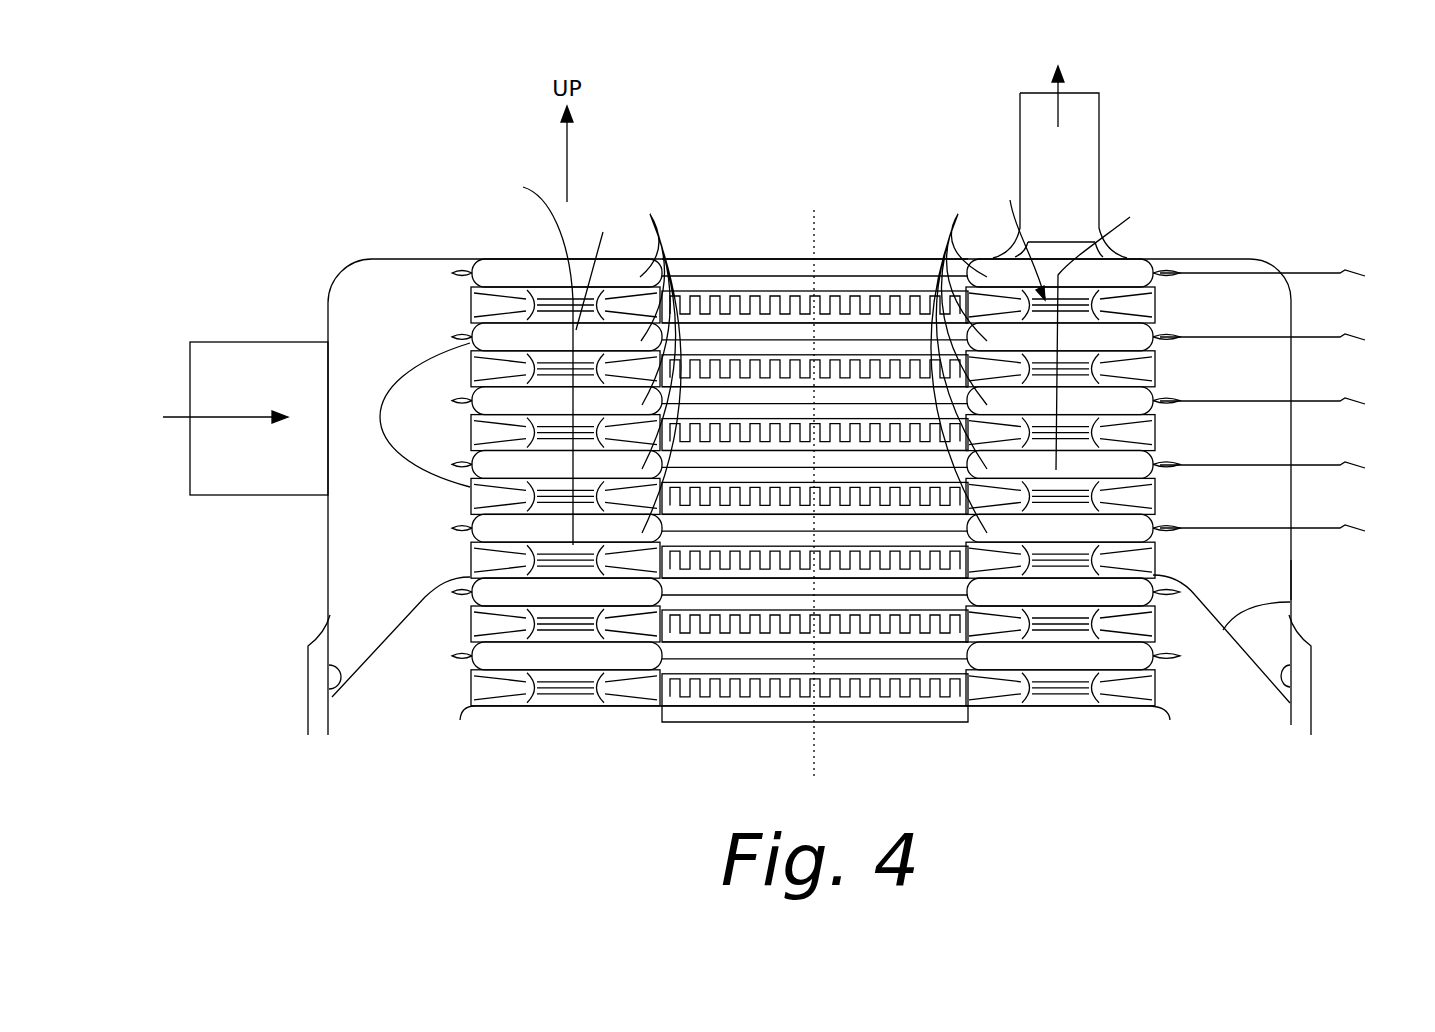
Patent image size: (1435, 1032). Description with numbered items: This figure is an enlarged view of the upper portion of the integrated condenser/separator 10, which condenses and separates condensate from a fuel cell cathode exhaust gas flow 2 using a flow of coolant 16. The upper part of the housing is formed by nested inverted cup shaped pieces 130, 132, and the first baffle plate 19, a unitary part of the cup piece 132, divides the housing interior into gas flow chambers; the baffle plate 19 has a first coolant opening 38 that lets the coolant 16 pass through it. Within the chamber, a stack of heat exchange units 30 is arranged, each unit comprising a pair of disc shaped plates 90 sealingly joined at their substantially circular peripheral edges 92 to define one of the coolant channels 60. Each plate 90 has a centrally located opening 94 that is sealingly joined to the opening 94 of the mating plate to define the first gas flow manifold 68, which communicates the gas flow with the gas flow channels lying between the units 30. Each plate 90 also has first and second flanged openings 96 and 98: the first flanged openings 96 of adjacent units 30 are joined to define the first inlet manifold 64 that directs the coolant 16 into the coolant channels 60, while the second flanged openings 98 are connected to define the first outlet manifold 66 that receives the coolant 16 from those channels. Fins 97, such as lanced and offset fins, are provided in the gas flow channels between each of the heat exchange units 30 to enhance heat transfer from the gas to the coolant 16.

The inlet air flow 2 is at (230, 418).
The integrated condenser/separator 10 is at (867, 117).
The coolant 16 is at (1067, 82).
The first baffle plate 19 is at (309, 665).
The heat exchange units 30 is at (470, 272).
The first coolant opening 38 is at (417, 602).
The first plurality of coolant channels 60 is at (650, 214).
The first inlet manifold 64 is at (603, 232).
The first outlet manifold 66 is at (1010, 200).
The first gas flow manifold 68 is at (823, 260).
The plates 90 is at (1279, 404).
The peripheral edges 92 is at (470, 303).
The centrally located opening 94 is at (958, 214).
The first flanged opening 96 is at (523, 187).
The fins 97 is at (470, 318).
The second flanged opening 98 is at (1130, 217).
The inverted cup shaped piece 130 is at (1292, 572).
The inverted cup shaped piece 132 is at (1290, 602).